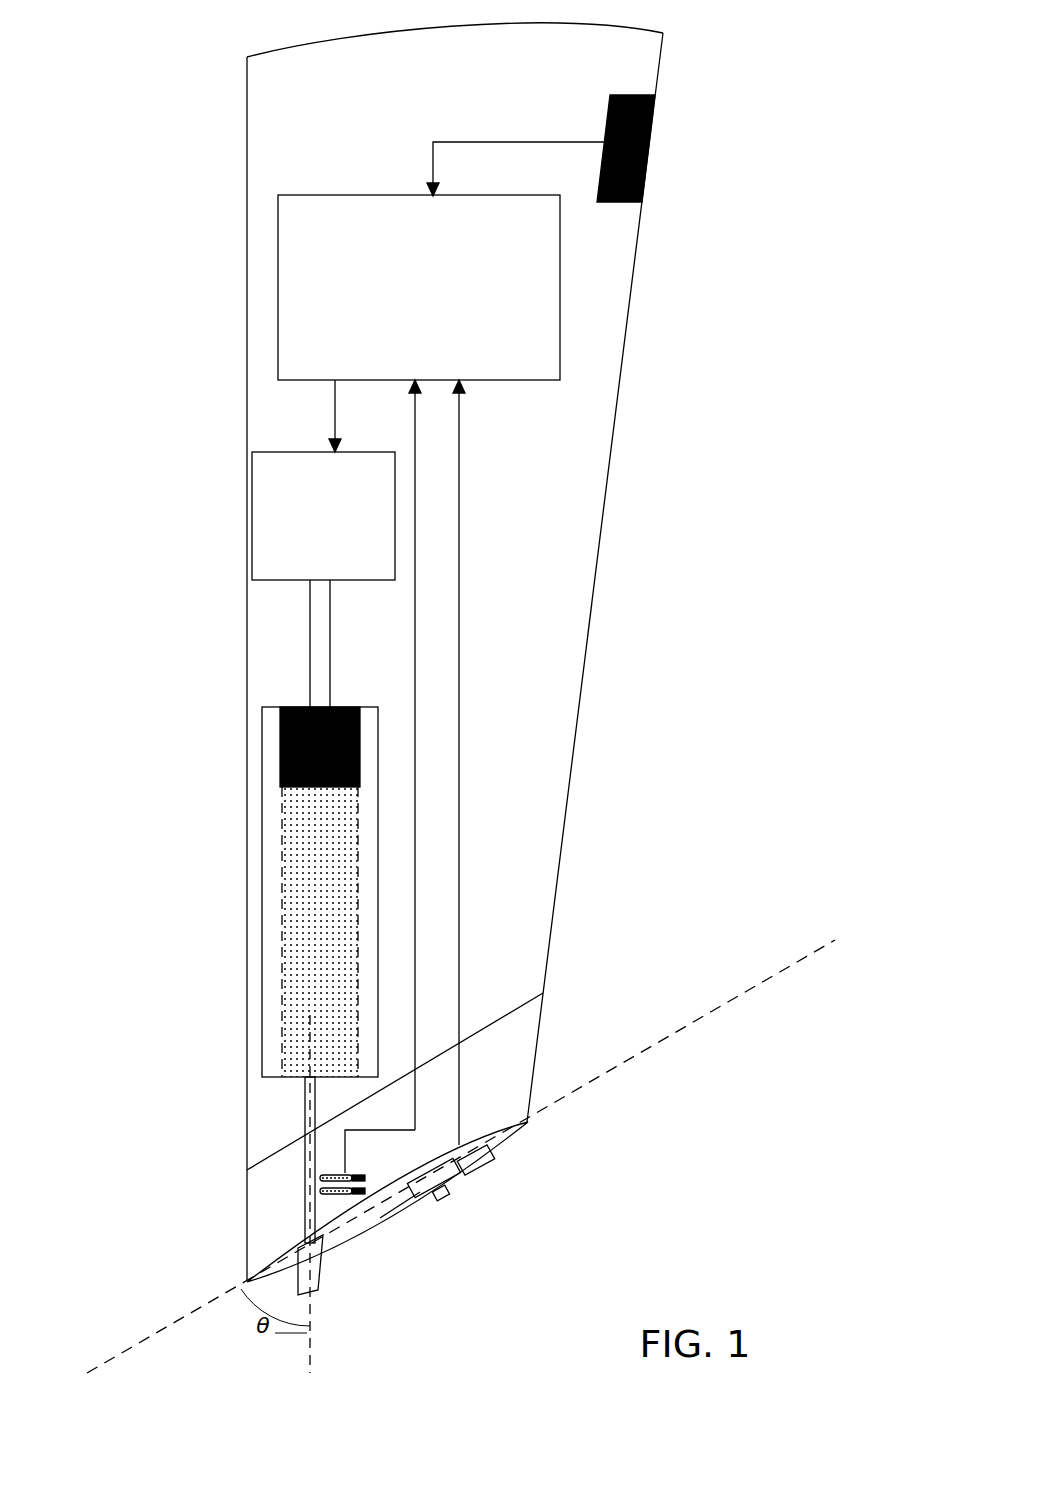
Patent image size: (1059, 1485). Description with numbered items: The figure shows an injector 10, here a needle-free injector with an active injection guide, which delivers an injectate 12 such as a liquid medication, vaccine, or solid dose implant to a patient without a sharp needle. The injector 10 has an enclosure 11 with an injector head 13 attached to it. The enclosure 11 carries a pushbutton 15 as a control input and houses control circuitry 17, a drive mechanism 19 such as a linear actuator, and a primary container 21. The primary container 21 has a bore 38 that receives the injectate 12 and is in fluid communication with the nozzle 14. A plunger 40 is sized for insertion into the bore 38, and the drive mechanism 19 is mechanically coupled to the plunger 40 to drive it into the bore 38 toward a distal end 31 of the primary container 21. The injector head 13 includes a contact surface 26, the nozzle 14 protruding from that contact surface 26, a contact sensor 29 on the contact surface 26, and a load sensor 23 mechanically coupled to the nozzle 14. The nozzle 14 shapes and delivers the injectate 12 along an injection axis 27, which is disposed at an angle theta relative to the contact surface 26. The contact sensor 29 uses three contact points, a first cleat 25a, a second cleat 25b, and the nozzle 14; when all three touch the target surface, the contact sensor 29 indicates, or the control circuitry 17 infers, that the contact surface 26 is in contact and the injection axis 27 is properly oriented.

The injector 10 is at (735, 470).
The enclosure 11 is at (582, 693).
The injectate 12 is at (300, 878).
The injector head 13 is at (247, 1208).
The nozzle 14 is at (322, 1272).
The pushbutton 15 is at (652, 140).
The control circuitry 17 is at (500, 380).
The drive mechanism 19 is at (270, 488).
The primary container 21 is at (272, 752).
The load sensor 23 is at (347, 1197).
The first cleat 25a is at (437, 1190).
The second cleat 25b is at (480, 1177).
The contact surface 26 is at (402, 1200).
The injection axis 27 is at (312, 1302).
The contact sensor 29 is at (456, 1278).
The distal end 31 is at (243, 1283).
The bore 38 is at (280, 962).
The plunger 40 is at (352, 706).